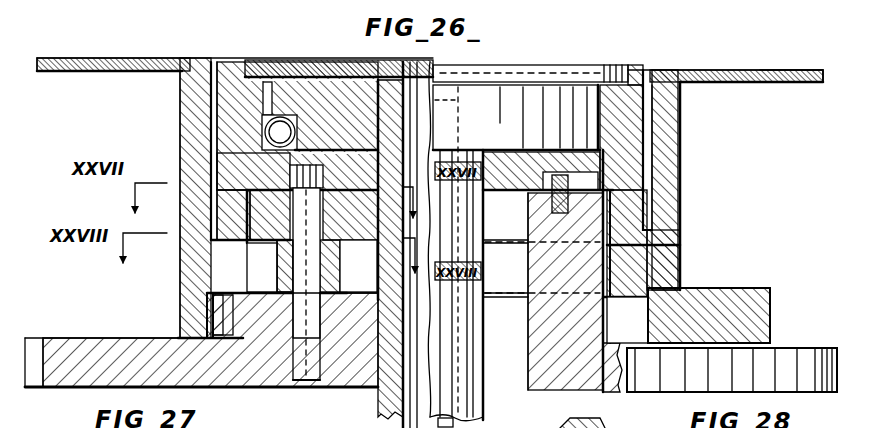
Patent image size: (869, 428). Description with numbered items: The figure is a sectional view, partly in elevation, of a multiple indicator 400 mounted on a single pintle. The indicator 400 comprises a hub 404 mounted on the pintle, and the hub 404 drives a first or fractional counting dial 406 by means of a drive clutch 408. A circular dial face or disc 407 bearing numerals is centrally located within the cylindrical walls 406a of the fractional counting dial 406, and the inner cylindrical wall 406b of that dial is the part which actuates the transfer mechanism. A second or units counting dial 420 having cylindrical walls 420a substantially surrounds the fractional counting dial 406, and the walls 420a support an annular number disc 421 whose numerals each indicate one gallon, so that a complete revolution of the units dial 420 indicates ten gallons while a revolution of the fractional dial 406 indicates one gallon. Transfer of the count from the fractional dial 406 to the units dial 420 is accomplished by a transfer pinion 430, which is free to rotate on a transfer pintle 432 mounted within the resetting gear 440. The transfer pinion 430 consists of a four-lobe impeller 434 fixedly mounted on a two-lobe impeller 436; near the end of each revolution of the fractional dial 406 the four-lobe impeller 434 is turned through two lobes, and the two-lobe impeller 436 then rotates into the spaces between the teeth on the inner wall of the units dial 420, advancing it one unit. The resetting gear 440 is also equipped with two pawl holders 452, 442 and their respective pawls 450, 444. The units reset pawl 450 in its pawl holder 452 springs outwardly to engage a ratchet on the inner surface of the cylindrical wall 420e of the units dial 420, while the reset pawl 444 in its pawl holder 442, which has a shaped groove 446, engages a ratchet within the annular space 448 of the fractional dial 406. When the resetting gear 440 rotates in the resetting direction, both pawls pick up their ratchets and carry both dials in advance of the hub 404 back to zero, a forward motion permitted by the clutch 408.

The indicator 400 is at (165, 46).
The hub 404 is at (387, 393).
The fractional counting dial 406 is at (237, 122).
The cylindrical walls 406a is at (635, 68).
The inner cylindrical wall 406b is at (641, 226).
The dial face disc 407 is at (388, 63).
The drive clutch 408 is at (282, 113).
The units counting dial 420 is at (664, 166).
The cylindrical walls 420a is at (662, 68).
The cylindrical wall 420e is at (668, 290).
The annular number disc 421 is at (797, 70).
The transfer pinion 430 is at (262, 221).
The transfer pintle 432 is at (303, 360).
The four-lobe impeller 434 is at (266, 186).
The two-lobe impeller 436 is at (280, 258).
The resetting gear 440 is at (788, 372).
The pawl holder 442 is at (602, 262).
The reset pawl 444 is at (567, 185).
The shaped groove 446 is at (572, 213).
The annular space 448 is at (600, 165).
The units reset pawl 450 is at (228, 320).
The pawl holder 452 is at (352, 310).